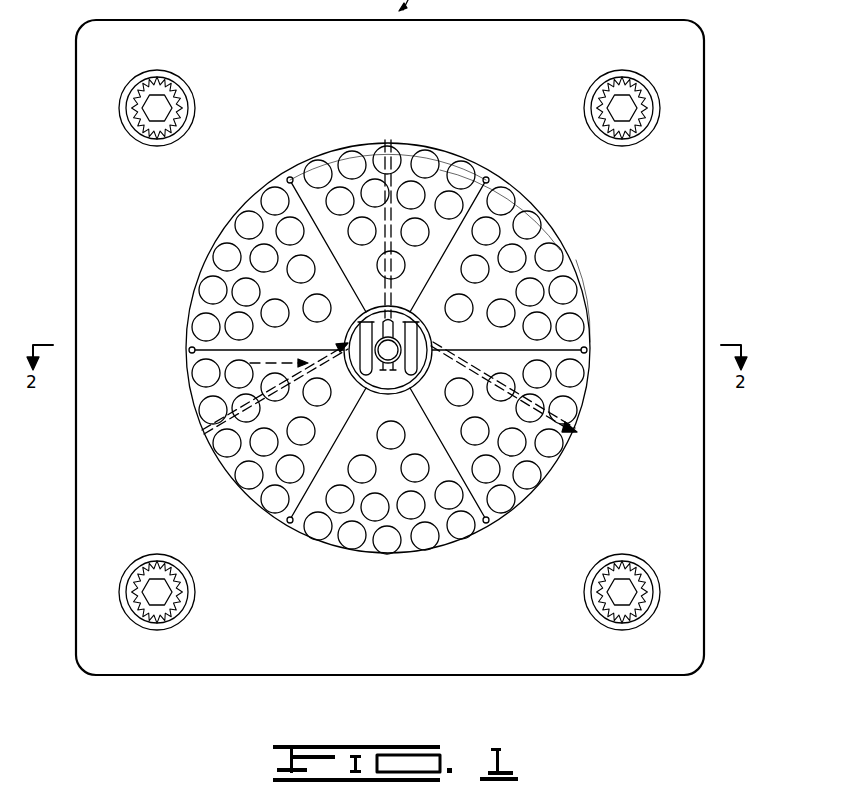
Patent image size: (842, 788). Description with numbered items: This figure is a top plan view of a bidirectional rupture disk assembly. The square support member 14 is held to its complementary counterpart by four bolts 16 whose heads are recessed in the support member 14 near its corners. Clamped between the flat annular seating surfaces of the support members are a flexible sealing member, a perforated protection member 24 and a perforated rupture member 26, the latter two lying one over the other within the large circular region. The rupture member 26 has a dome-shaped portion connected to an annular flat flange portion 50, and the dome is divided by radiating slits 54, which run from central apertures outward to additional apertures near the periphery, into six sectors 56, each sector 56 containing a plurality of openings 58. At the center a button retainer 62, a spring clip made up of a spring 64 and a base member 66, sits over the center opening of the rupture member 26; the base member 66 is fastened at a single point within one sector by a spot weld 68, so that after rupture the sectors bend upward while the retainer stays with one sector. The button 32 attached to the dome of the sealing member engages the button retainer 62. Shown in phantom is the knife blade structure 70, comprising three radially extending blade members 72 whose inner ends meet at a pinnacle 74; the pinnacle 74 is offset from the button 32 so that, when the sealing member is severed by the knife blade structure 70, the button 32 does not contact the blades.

The support member 14 is at (690, 472).
The bolts 16 is at (157, 70).
The perforated protection member 24 is at (477, 212).
The perforated rupture member 26 is at (598, 340).
The button 32 is at (402, 341).
The annular flat flange portion 50 is at (283, 522).
The slits 54 is at (486, 170).
The sectors 56 is at (291, 178).
The openings 58 is at (315, 162).
The button retainer 62 is at (362, 318).
The spring 64 is at (420, 365).
The base member 66 is at (432, 338).
The spot weld 68 is at (358, 363).
The knife blade structure 70 is at (200, 372).
The blade members 72 is at (382, 148).
The pinnacle 74 is at (392, 316).